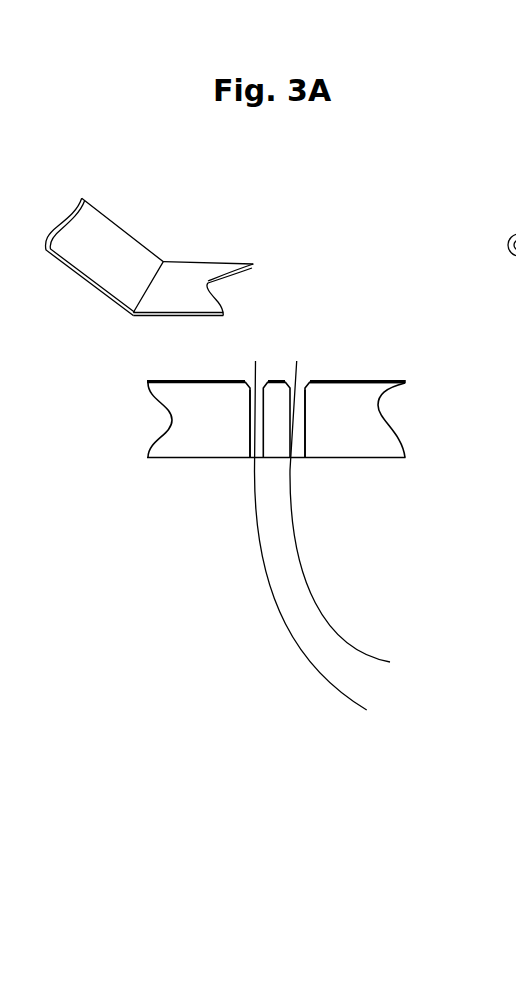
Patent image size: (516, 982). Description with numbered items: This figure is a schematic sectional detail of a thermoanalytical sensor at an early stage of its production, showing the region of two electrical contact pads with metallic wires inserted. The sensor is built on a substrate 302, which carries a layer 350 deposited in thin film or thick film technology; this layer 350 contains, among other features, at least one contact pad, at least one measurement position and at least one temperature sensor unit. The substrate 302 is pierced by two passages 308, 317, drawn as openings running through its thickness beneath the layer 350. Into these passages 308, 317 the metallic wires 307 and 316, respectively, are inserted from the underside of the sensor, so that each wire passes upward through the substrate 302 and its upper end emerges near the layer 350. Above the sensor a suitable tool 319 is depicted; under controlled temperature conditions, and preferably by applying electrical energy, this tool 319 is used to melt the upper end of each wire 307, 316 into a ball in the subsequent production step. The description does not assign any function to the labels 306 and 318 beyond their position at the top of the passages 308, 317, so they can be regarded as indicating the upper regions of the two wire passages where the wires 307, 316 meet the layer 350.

The substrate 302 is at (222, 435).
The first slot 306 is at (248, 382).
The metallic wire 307 is at (305, 672).
The passage 308 is at (250, 418).
The metallic wire 316 is at (360, 643).
The passage 317 is at (303, 425).
The second slot 318 is at (307, 382).
The tool 319 is at (113, 258).
The layer 350 is at (407, 382).